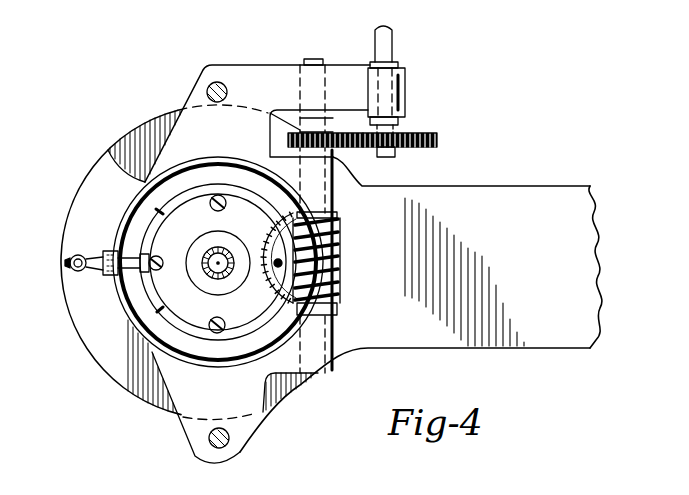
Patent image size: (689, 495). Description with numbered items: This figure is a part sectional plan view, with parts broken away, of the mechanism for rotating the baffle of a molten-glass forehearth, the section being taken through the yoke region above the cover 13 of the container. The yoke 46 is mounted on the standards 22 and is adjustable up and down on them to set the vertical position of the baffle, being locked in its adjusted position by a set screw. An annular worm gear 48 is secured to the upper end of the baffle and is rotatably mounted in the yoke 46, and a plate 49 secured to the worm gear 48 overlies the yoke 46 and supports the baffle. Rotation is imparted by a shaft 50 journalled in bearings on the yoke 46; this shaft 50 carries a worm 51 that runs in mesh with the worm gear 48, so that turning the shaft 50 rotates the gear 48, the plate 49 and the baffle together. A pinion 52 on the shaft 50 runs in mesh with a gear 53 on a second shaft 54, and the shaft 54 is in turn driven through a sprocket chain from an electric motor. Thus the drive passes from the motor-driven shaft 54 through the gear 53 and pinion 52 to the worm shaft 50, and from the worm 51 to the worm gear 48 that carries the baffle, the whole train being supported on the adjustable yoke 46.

The cover 13 is at (120, 374).
The standards 22 is at (207, 442).
The yoke 46 is at (258, 390).
The annular worm gear 48 is at (307, 213).
The plate 49 is at (142, 222).
The shaft 50 is at (306, 62).
The worm 51 is at (337, 257).
The pinion 52 is at (335, 148).
The gear 53 is at (405, 147).
The shaft 54 is at (394, 52).